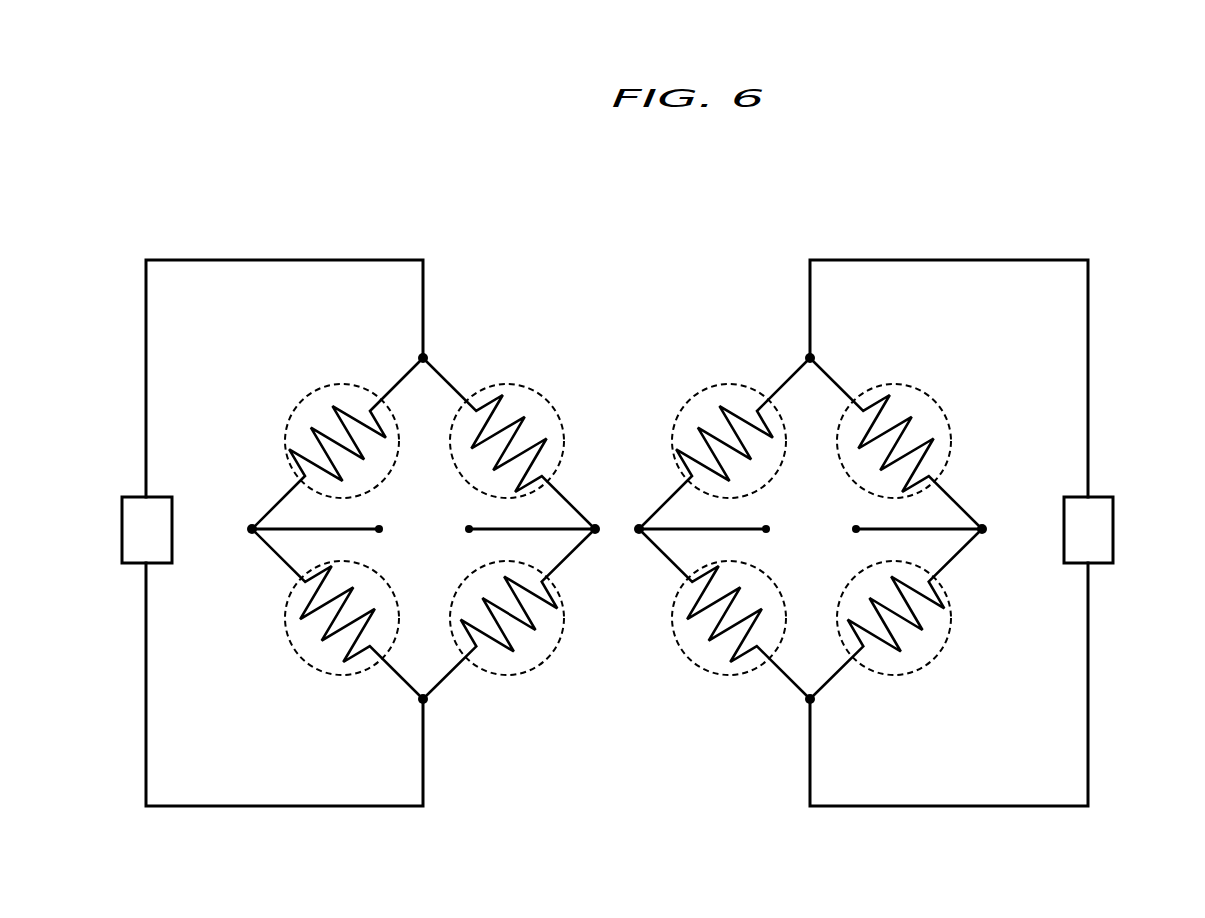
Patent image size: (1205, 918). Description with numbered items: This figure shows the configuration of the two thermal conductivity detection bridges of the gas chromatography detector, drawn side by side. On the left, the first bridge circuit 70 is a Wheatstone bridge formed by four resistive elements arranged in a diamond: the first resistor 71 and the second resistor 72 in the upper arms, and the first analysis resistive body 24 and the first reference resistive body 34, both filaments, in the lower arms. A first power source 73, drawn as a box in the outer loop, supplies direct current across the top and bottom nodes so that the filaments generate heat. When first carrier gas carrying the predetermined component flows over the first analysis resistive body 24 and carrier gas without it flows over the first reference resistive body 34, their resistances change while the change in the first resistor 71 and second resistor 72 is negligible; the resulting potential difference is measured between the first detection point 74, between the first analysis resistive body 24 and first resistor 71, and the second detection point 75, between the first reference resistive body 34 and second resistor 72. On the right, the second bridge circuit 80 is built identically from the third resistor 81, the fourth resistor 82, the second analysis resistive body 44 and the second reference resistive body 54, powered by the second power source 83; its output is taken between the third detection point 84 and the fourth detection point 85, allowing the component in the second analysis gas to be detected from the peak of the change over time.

The first bridge circuit 70 is at (472, 312).
The first resistor 71 is at (294, 406).
The second resistor 72 is at (550, 403).
The first analysis resistive body 24 is at (298, 655).
The first reference resistive body 34 is at (545, 662).
The first power source 73 is at (135, 496).
The first detection point 74 is at (380, 527).
The second detection point 75 is at (467, 533).
The second bridge circuit 80 is at (777, 312).
The third resistor 81 is at (681, 406).
The fourth resistor 82 is at (937, 403).
The second analysis resistive body 44 is at (685, 655).
The second reference resistive body 54 is at (932, 662).
The second power source 83 is at (1100, 496).
The third detection point 84 is at (767, 527).
The fourth detection point 85 is at (854, 533).